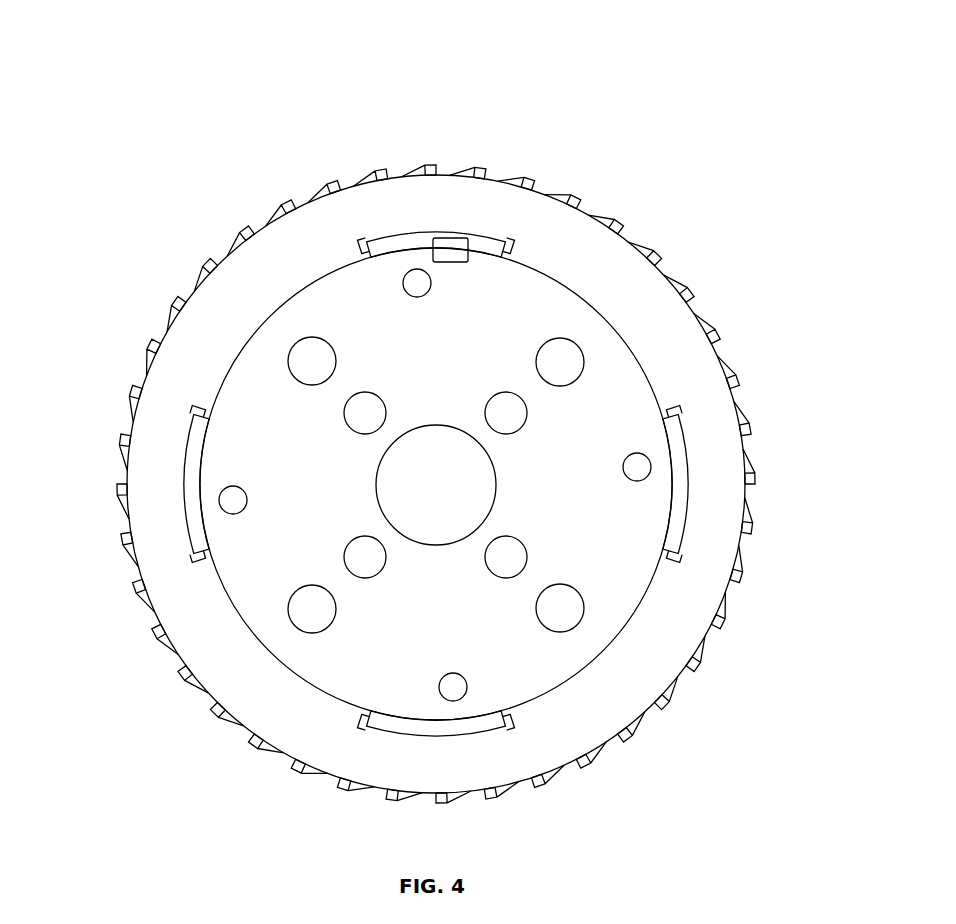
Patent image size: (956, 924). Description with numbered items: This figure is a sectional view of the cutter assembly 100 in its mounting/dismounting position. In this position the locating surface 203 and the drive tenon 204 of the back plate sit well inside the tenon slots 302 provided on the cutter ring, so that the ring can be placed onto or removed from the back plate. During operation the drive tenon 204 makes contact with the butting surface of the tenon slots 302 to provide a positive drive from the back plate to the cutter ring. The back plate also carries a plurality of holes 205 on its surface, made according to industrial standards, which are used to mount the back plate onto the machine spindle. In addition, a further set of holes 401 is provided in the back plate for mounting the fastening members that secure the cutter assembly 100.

The cutter assembly 100 is at (573, 134).
The locating surface 203 is at (424, 247).
The drive tenon 204 is at (447, 244).
The holes 205 is at (352, 546).
The tenon slots 302 is at (498, 247).
The holes 401 is at (457, 681).